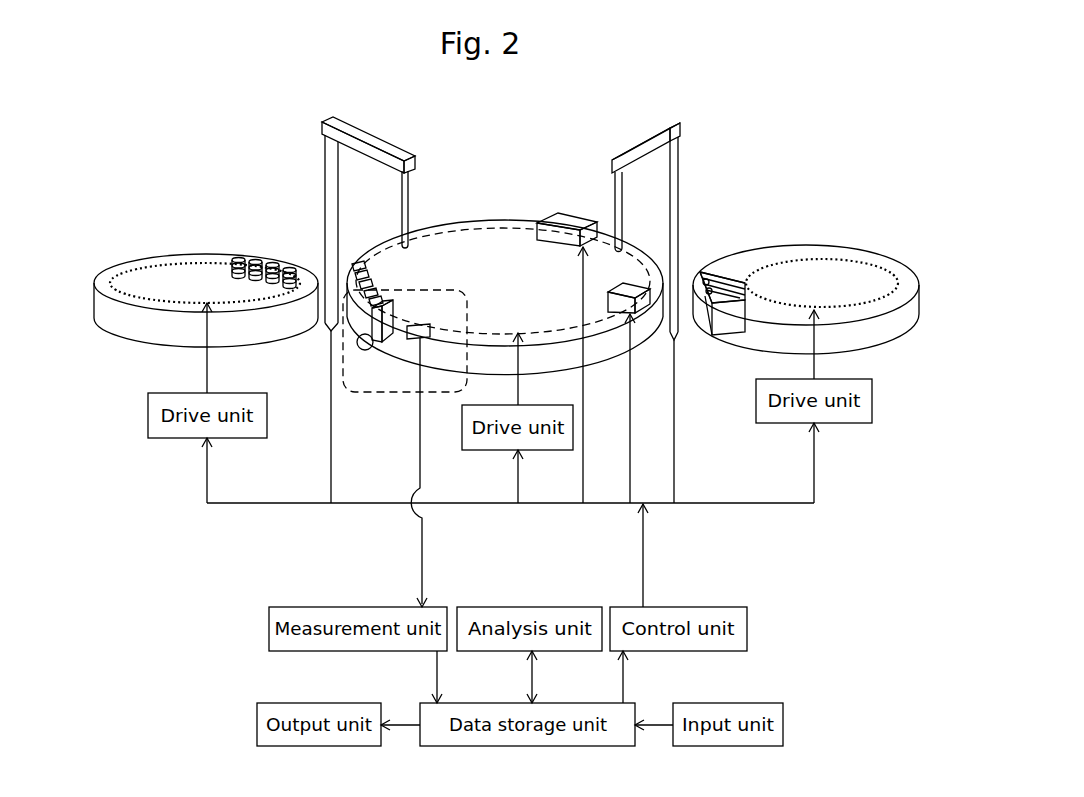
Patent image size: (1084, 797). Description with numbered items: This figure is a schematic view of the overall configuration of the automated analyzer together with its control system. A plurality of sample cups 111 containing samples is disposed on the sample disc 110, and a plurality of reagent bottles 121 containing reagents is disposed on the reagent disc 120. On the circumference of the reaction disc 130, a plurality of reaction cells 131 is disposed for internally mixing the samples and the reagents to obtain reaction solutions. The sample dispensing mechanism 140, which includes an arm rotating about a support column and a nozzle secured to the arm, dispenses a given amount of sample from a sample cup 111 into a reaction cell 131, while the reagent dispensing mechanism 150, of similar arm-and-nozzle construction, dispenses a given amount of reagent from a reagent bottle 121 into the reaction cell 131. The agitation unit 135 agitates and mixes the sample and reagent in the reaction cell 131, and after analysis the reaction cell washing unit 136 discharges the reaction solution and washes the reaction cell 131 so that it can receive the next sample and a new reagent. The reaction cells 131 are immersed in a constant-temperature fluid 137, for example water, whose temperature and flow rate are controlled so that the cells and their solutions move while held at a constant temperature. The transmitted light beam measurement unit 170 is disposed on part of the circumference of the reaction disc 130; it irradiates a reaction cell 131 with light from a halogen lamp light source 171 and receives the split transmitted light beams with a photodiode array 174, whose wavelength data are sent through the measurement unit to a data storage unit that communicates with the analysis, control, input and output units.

The sample disc 110 is at (107, 277).
The sample cups 111 is at (238, 256).
The reagent disc 120 is at (838, 251).
The reagent bottles 121 is at (748, 298).
The reaction disc 130 is at (485, 228).
The reaction cells 131 is at (396, 309).
The agitation unit 135 is at (545, 222).
The reaction cell washing unit 136 is at (629, 283).
The constant-temperature fluid 137 is at (640, 345).
The sample dispensing mechanism 140 is at (395, 150).
The reagent dispensing mechanism 150 is at (627, 150).
The transmitted light beam measurement unit 170 is at (467, 293).
The halogen lamp light source 171 is at (362, 351).
The photodiode array 174 is at (432, 328).